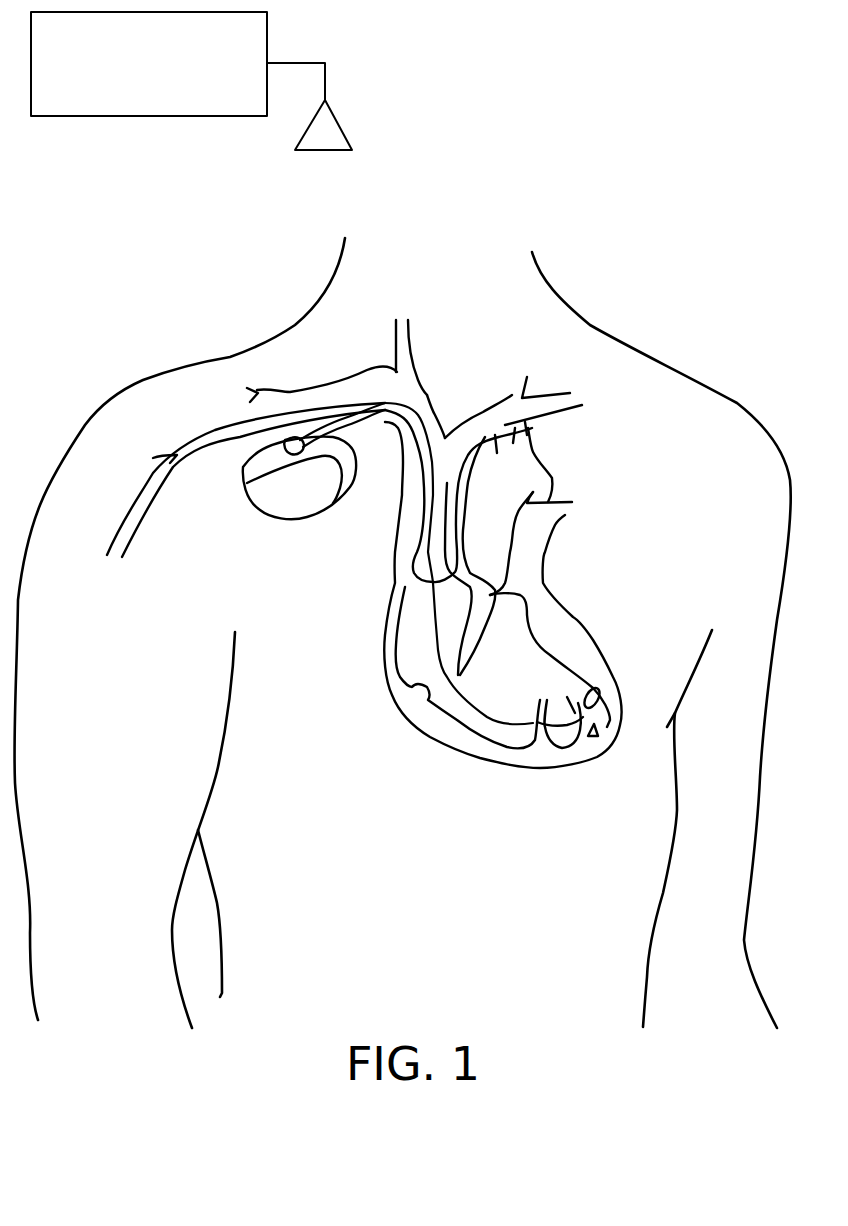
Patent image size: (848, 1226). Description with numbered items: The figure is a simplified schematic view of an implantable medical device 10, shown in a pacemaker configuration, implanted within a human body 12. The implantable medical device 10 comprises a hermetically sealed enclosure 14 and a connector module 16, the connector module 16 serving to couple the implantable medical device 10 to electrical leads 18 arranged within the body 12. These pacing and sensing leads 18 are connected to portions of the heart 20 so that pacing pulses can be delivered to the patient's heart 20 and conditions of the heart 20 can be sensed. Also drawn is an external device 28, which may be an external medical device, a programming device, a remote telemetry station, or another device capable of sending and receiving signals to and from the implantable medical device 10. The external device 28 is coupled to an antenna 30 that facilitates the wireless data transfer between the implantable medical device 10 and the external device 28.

The implantable medical device 10 is at (353, 553).
The human body 12 is at (640, 325).
The hermetically sealed enclosure 14 is at (313, 487).
The connector module 16 is at (268, 457).
The electrical leads 18 is at (413, 530).
The heart 20 is at (500, 765).
The external device 28 is at (136, 100).
The antenna 30 is at (345, 133).